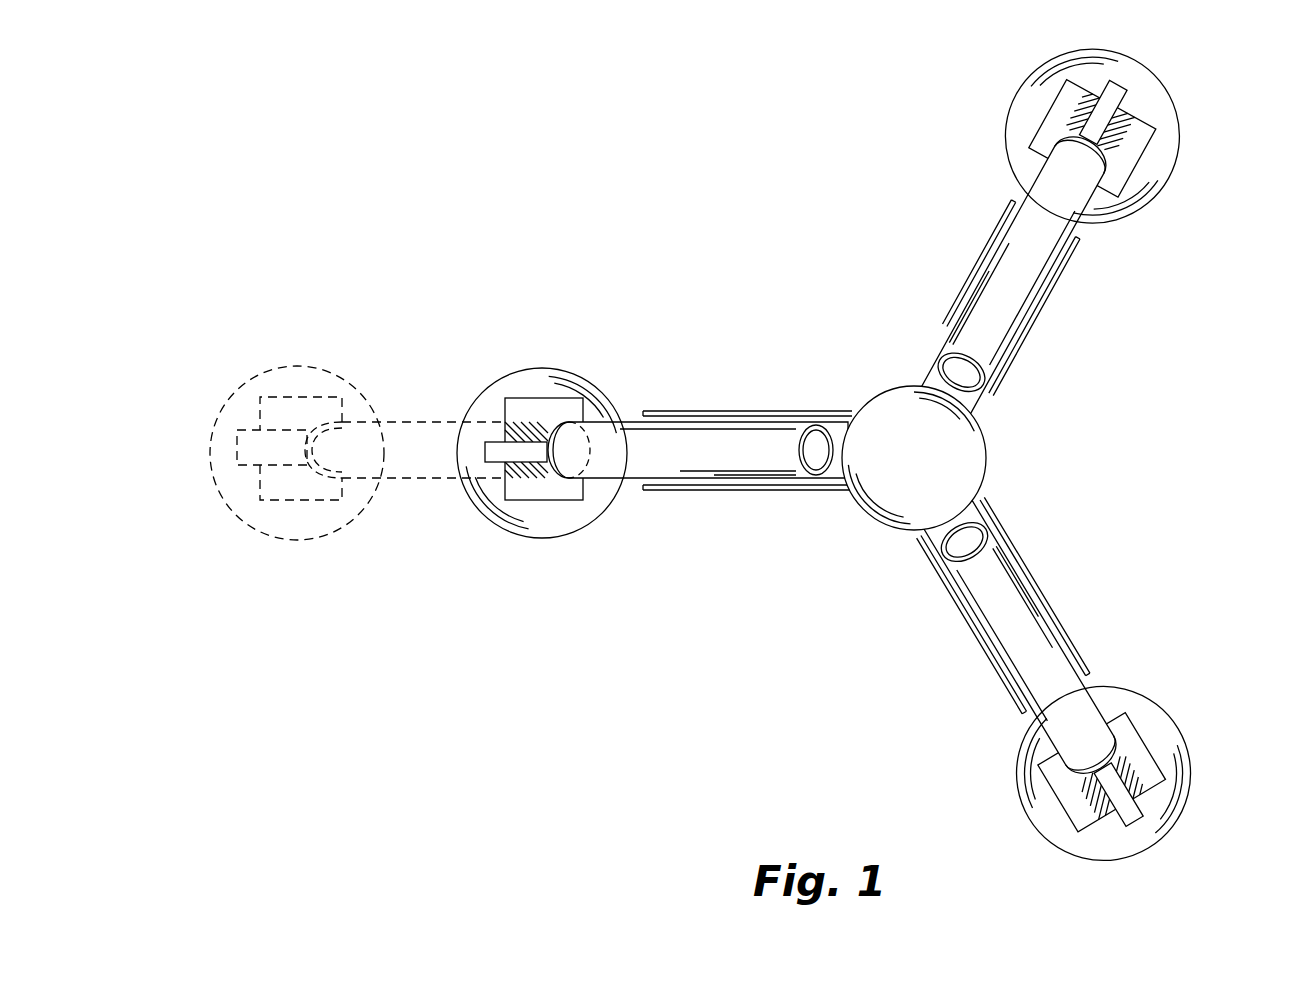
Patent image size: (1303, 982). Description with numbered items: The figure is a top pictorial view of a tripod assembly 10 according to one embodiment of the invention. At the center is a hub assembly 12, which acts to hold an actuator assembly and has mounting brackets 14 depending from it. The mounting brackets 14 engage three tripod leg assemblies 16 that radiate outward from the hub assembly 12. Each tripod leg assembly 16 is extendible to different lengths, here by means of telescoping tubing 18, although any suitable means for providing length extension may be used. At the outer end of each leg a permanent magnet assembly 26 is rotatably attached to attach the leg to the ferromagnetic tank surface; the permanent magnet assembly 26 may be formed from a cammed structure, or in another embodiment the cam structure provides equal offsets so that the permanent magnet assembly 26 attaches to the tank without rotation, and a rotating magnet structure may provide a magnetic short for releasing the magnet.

The tripod assembly 10 is at (650, 160).
The hub assembly 12 is at (960, 453).
The mounting brackets 14 is at (947, 314).
The tripod leg assembly 16 is at (972, 114).
The telescoping tubing 18 is at (992, 247).
The permanent magnet assembly 26 is at (1137, 75).